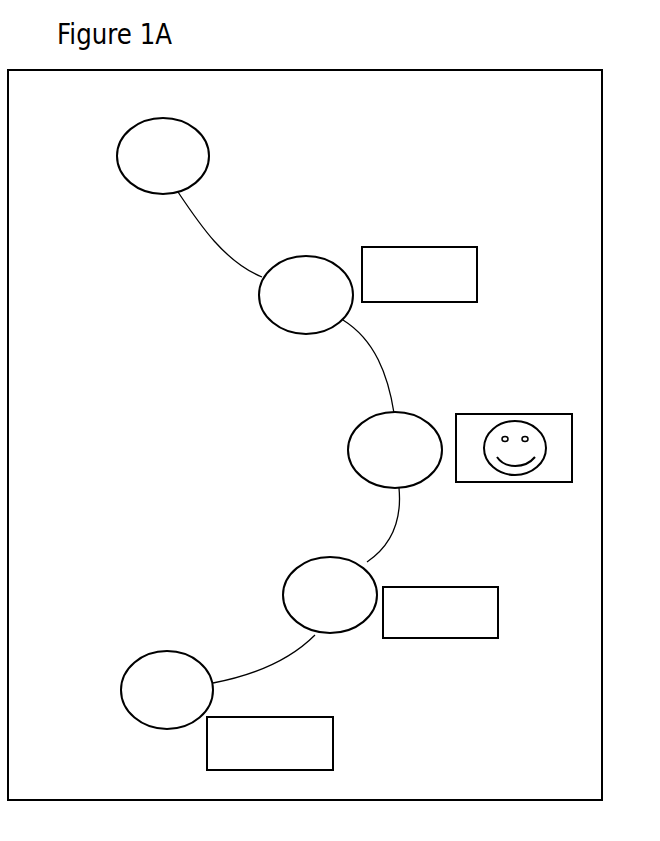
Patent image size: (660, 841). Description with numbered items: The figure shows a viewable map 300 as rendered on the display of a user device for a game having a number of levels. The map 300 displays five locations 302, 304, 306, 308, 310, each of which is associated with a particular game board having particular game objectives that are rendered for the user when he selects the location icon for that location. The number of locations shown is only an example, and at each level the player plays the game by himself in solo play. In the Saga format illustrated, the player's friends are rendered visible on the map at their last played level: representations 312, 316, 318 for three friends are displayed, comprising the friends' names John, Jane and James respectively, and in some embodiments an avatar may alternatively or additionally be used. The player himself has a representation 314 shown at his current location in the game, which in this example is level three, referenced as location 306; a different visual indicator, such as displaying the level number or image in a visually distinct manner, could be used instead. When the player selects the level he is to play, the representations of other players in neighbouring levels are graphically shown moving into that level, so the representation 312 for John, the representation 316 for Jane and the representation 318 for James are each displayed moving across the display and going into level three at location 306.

The viewable map 300 is at (521, 86).
The location 302 is at (213, 145).
The location 304 is at (259, 293).
The location 306 is at (349, 451).
The location 308 is at (305, 567).
The location 310 is at (148, 657).
The representation 312 is at (478, 273).
The representation 314 is at (512, 413).
The representation 316 is at (443, 587).
The representation 318 is at (334, 745).